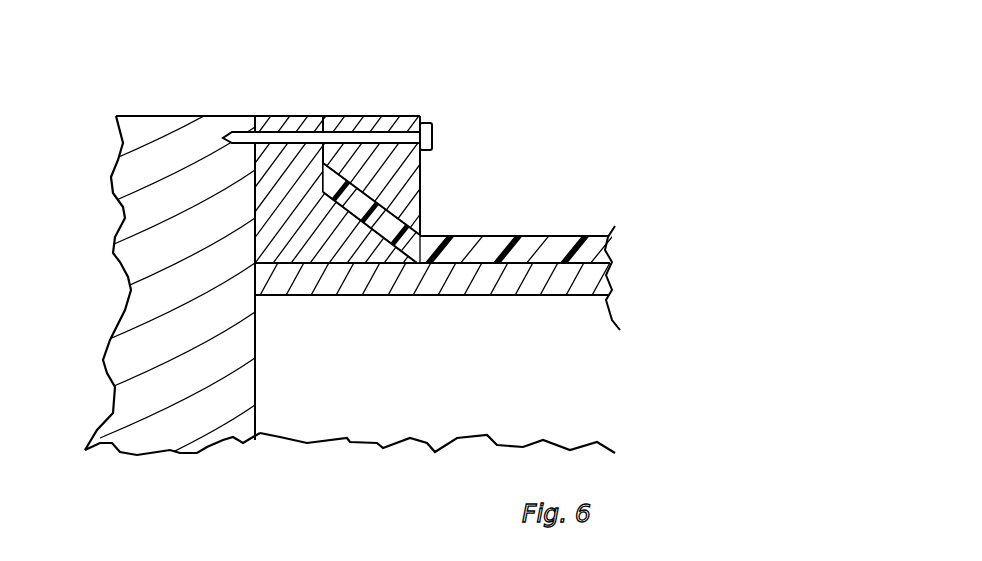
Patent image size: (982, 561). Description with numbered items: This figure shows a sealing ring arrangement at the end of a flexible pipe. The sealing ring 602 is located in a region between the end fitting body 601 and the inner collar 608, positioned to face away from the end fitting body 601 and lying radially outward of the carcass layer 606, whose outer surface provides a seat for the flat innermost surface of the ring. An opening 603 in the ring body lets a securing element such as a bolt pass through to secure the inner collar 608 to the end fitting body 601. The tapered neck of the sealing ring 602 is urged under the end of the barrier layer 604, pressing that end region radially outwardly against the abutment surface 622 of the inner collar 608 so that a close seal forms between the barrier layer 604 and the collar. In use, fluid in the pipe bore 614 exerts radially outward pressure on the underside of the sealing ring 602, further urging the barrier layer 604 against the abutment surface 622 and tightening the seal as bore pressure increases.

The end fitting body 601 is at (173, 133).
The sealing ring 602 is at (276, 155).
The opening 603 is at (307, 133).
The inner collar 608 is at (375, 153).
The abutment surface 622 is at (388, 210).
The barrier layer 604 is at (536, 241).
The carcass layer 606 is at (582, 282).
The pipe bore 614 is at (415, 377).